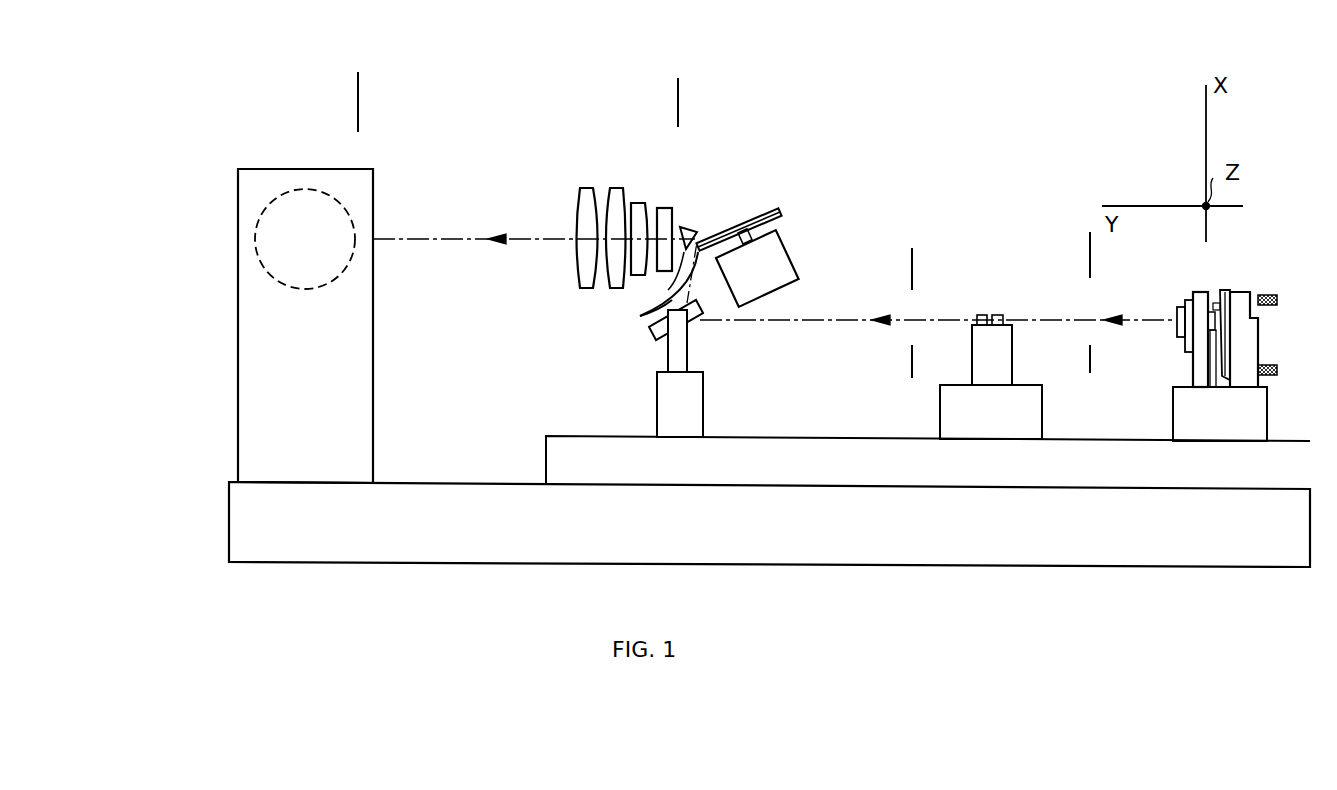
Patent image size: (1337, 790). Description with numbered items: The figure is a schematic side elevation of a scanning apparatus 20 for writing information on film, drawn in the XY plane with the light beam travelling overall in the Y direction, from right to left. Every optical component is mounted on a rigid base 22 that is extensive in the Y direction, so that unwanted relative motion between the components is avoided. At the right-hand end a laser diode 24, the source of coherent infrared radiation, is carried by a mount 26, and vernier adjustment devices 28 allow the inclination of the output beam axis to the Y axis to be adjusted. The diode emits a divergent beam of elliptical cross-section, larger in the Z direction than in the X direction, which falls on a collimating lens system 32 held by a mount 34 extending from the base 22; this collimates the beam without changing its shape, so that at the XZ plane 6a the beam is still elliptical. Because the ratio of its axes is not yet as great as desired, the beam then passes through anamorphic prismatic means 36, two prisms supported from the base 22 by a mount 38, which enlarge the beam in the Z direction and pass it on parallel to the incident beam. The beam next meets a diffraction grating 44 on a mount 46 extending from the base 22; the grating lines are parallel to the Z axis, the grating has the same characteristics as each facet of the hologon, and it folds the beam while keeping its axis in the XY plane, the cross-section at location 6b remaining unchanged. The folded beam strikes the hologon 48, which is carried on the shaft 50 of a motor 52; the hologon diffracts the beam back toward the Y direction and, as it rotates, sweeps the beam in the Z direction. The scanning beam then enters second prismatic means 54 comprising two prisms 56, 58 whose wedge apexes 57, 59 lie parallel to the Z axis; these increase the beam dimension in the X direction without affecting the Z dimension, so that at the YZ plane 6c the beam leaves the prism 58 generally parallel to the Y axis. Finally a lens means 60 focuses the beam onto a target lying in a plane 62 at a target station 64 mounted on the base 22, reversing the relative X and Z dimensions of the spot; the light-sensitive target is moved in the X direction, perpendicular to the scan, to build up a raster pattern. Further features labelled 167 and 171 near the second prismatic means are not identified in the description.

The scanning apparatus 20 is at (882, 232).
The rigid base 22 is at (933, 545).
The laser diode 24 is at (1222, 291).
The mount 26 is at (1252, 350).
The vernier adjustment devices 28 is at (1269, 294).
The collimating lens system 32 is at (1178, 311).
The mount 34 is at (1200, 370).
The prismatic means 36 is at (989, 305).
The mount 38 is at (997, 358).
The diffraction grating 44 is at (654, 328).
The mount 46 is at (679, 357).
The hologon 48 is at (771, 211).
The shaft 50 is at (771, 223).
The motor 52 is at (783, 272).
The second prismatic means 54 is at (691, 200).
The prism 56 is at (704, 227).
The apex 57 is at (703, 235).
The prism 58 is at (685, 224).
The apex 59 is at (683, 264).
The lens means 60 is at (592, 186).
The plane 62 is at (360, 105).
The target station 64 is at (282, 160).
The edge 167 is at (703, 223).
The curved surface 171 is at (660, 307).
The XZ plane 6a is at (1097, 264).
The cross-sectional plane 6b is at (919, 274).
The YZ plane 6c is at (684, 103).